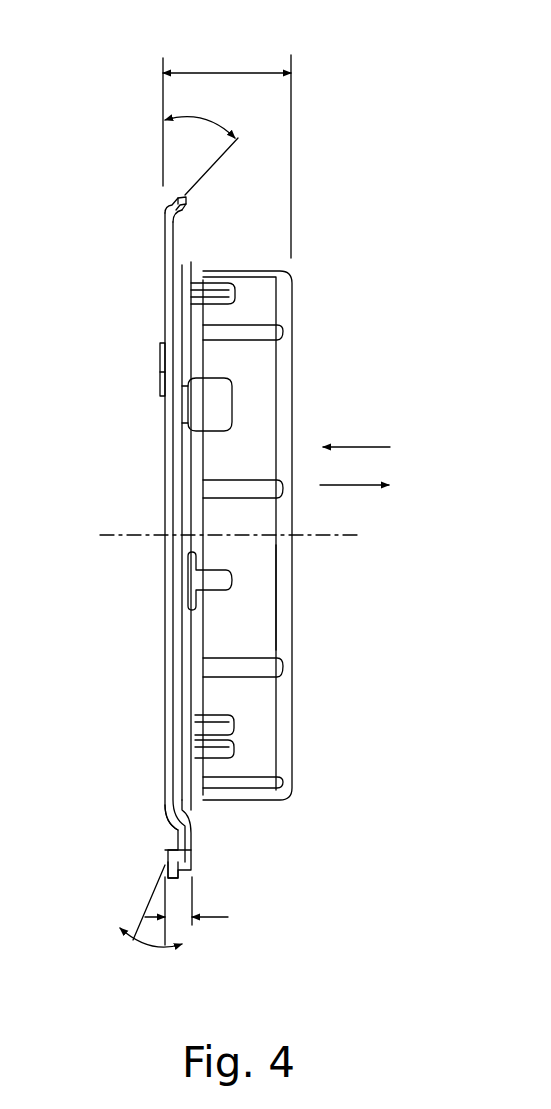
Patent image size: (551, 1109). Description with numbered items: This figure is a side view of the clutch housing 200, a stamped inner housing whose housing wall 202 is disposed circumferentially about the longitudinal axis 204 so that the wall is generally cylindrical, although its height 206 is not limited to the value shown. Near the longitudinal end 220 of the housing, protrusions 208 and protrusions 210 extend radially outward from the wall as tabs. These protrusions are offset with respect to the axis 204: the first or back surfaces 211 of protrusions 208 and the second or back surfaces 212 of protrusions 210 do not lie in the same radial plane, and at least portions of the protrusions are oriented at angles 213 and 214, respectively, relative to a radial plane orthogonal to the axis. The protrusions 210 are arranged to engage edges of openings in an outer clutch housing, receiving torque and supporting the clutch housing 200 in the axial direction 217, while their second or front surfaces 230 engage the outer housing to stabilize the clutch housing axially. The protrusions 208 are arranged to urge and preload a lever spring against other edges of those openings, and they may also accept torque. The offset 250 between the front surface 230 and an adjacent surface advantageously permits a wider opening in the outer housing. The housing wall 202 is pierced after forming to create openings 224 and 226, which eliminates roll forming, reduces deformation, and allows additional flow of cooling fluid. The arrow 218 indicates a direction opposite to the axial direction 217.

The clutch housing 200 is at (96, 127).
The housing wall 202 is at (262, 297).
The longitudinal axis 204 is at (316, 535).
The height 206 is at (227, 73).
The protrusion 208 is at (163, 348).
The protrusion 210 is at (160, 213).
The first or back surface 211 is at (163, 860).
The second or back surface 212 is at (167, 853).
The angle 213 is at (148, 940).
The angle 214 is at (205, 121).
The axial direction 217 is at (332, 485).
The removal direction 218 is at (363, 447).
The longitudinal end 220 is at (147, 378).
The opening 224 is at (263, 662).
The opening 226 is at (210, 407).
The second or front surface 230 is at (190, 205).
The offset 250 is at (228, 917).